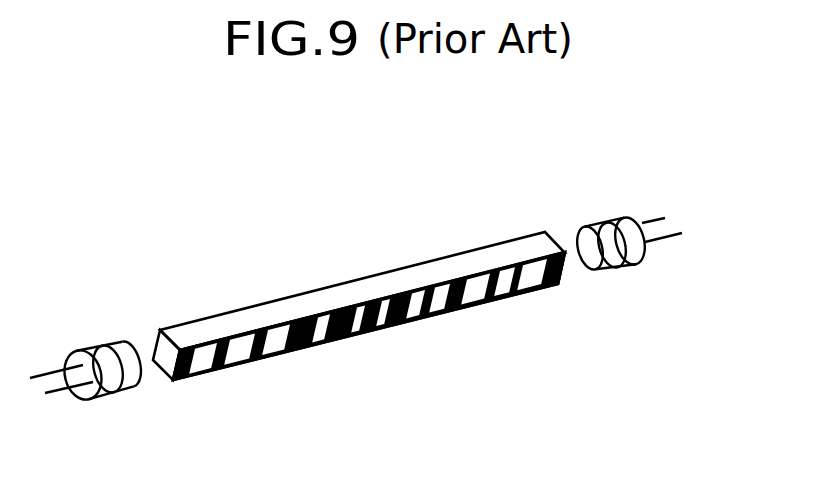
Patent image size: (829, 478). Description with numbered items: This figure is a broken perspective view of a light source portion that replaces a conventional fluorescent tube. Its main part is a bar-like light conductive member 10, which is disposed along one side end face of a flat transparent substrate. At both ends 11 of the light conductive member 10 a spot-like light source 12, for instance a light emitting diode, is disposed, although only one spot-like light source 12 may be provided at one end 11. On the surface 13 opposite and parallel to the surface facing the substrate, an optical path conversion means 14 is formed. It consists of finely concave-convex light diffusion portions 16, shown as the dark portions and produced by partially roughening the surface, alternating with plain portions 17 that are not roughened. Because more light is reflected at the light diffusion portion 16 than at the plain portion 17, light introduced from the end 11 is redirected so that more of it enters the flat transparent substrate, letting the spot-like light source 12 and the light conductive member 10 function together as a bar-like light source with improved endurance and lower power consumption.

The light conductive member 10 is at (290, 315).
The end 11 is at (163, 358).
The spot-like light source 12 is at (105, 347).
The surface 13 is at (537, 277).
The optical path conversion means 14 is at (463, 214).
The light diffusion portion 16 is at (395, 297).
The plain portion 17 is at (452, 286).